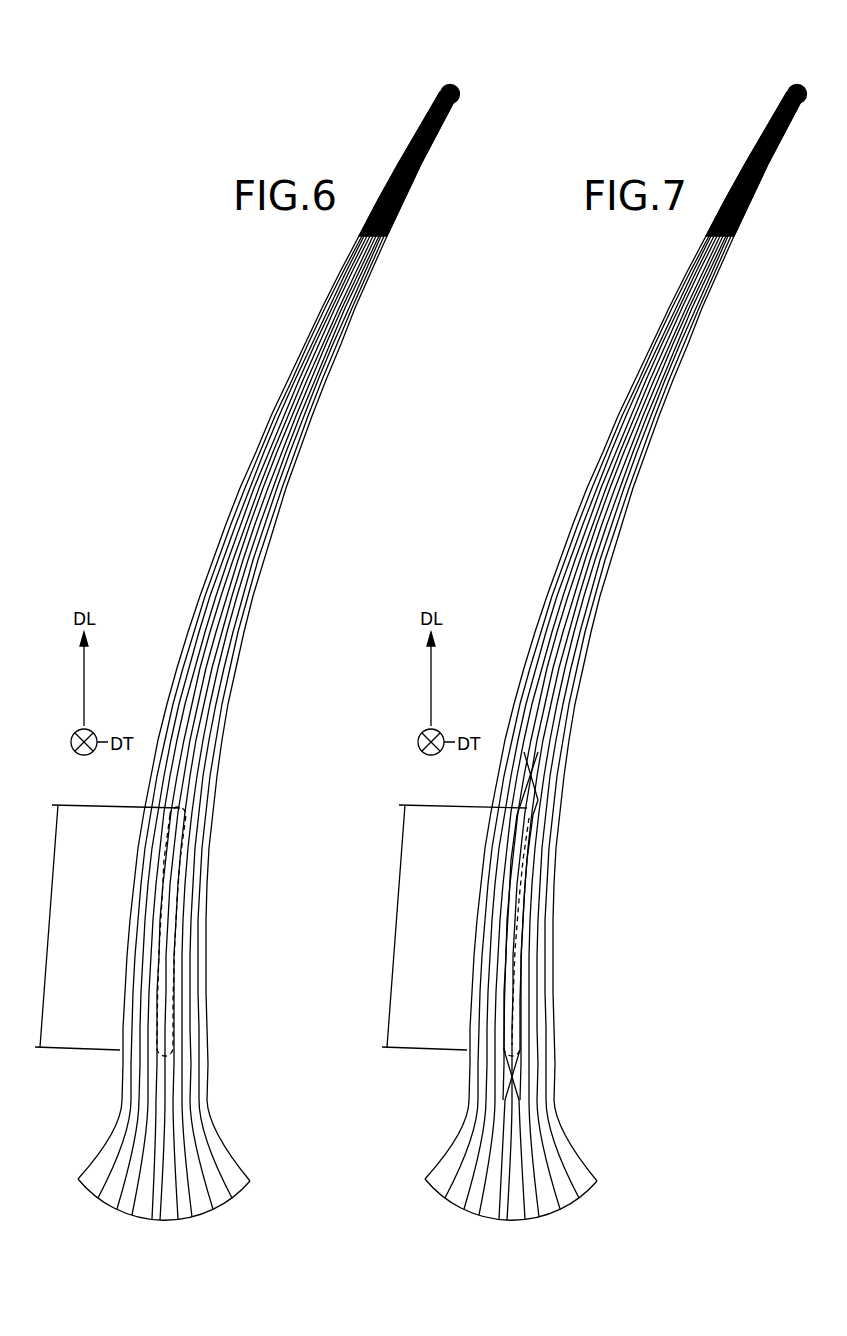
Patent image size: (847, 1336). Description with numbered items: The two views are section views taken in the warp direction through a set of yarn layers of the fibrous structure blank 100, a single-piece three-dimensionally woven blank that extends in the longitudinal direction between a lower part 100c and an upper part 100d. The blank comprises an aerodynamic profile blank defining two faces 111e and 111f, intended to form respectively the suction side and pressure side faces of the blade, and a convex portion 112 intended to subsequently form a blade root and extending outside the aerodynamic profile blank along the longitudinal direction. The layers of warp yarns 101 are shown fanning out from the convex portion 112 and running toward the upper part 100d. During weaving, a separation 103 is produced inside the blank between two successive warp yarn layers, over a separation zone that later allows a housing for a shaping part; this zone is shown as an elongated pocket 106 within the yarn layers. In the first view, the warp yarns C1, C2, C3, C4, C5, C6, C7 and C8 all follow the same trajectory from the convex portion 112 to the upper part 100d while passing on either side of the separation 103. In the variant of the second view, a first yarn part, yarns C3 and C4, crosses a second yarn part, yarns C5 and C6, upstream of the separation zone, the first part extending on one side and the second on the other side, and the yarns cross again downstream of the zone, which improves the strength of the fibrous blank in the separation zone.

In FIG. 6, the fibrous structure blank 100 is at (227, 422).
In FIG. 7, the fibrous structure blank 100 is at (641, 656).
In FIG. 6, the lower part 100c is at (165, 1225).
In FIG. 7, the lower part 100c is at (511, 1232).
In FIG. 6, the upper part 100d is at (452, 86).
In FIG. 7, the upper part 100d is at (773, 135).
In FIG. 6, the warp yarns 101 is at (107, 1155).
In FIG. 7, the warp yarns 101 is at (430, 1139).
In FIG. 6, the separation 103 is at (96, 927).
In FIG. 7, the separation 103 is at (443, 927).
In FIG. 6, the opening 106 is at (169, 954).
In FIG. 7, the opening 106 is at (560, 926).
In FIG. 6, the face 111e is at (215, 563).
In FIG. 7, the face 111e is at (628, 596).
In FIG. 6, the face 111f is at (262, 560).
In FIG. 7, the face 111f is at (679, 596).
In FIG. 6, the convex portion 112 is at (223, 1134).
In FIG. 7, the convex portion 112 is at (586, 1140).
In FIG. 6, the warp yarn C1 is at (97, 1196).
In FIG. 7, the warp yarn C1 is at (437, 1157).
In FIG. 6, the warp yarn C2 is at (116, 1207).
In FIG. 7, the warp yarn C2 is at (452, 1166).
In FIG. 6, the warp yarn C3 is at (131, 1213).
In FIG. 7, the warp yarn C3 is at (469, 1173).
In FIG. 6, the warp yarn C4 is at (151, 1217).
In FIG. 7, the warp yarn C4 is at (487, 1178).
In FIG. 6, the warp yarn C5 is at (179, 1218).
In FIG. 7, the warp yarn C5 is at (535, 1178).
In FIG. 6, the warp yarn C6 is at (192, 1215).
In FIG. 7, the warp yarn C6 is at (554, 1173).
In FIG. 6, the warp yarn C7 is at (213, 1207).
In FIG. 7, the warp yarn C7 is at (571, 1165).
In FIG. 6, the warp yarn C8 is at (233, 1196).
In FIG. 7, the warp yarn C8 is at (588, 1157).